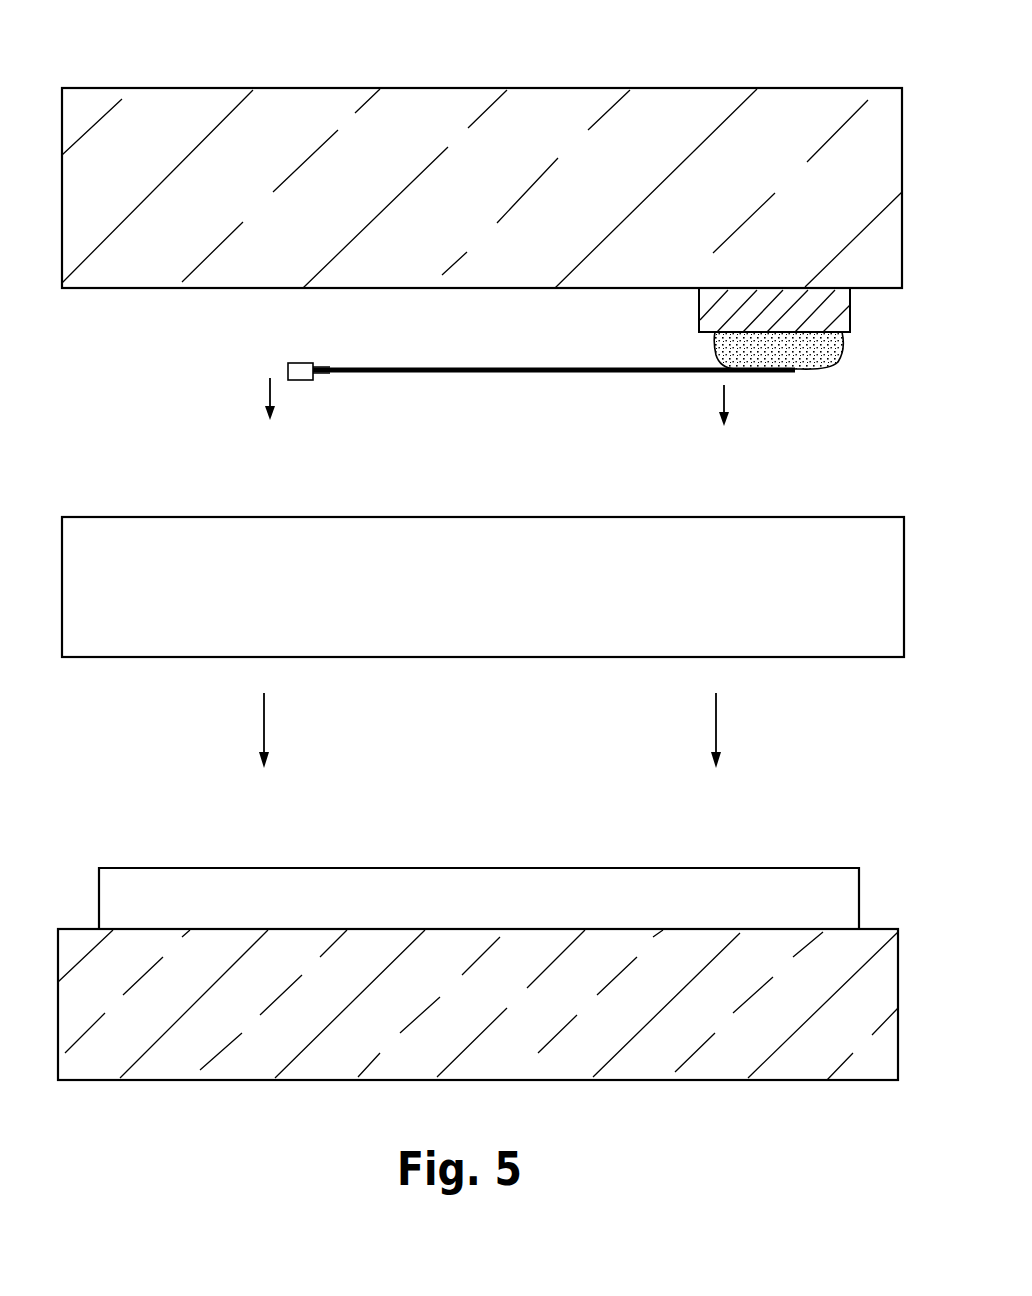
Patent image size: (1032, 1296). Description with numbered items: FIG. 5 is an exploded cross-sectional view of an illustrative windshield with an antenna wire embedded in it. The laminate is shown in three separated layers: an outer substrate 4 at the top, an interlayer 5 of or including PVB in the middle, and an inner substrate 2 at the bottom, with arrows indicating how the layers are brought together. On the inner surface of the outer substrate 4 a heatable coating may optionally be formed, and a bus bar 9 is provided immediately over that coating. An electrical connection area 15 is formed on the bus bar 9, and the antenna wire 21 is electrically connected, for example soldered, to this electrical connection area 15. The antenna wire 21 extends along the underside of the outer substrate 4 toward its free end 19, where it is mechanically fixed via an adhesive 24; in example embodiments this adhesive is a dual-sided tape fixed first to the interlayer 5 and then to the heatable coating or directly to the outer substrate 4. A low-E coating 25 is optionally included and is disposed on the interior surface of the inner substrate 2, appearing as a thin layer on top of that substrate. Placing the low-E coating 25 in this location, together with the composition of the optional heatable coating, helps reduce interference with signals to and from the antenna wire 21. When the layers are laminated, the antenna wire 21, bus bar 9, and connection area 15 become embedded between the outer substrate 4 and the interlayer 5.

The inner substrate 2 is at (647, 1063).
The outer substrate 4 is at (570, 108).
The interlayer 5 is at (118, 657).
The bus bar 9 is at (728, 313).
The electrical connection area 15 is at (800, 349).
The free end 19 is at (297, 363).
The antenna wire 21 is at (535, 369).
The adhesive 24 is at (300, 380).
The low-E coating 25 is at (767, 888).